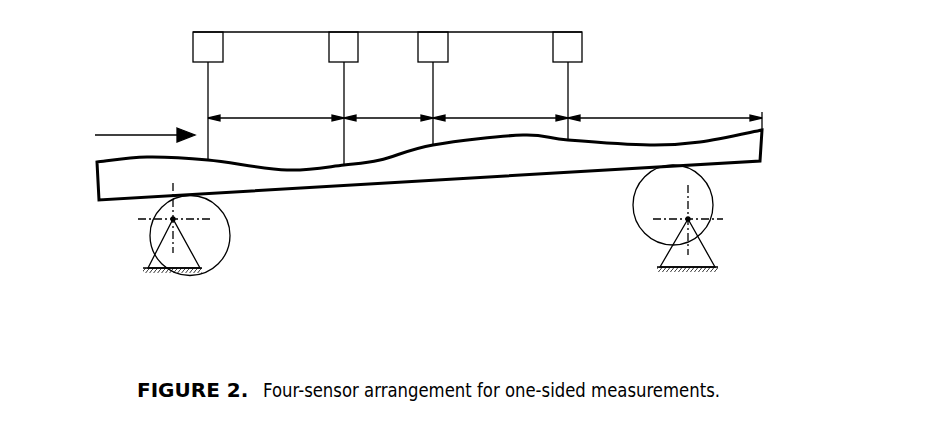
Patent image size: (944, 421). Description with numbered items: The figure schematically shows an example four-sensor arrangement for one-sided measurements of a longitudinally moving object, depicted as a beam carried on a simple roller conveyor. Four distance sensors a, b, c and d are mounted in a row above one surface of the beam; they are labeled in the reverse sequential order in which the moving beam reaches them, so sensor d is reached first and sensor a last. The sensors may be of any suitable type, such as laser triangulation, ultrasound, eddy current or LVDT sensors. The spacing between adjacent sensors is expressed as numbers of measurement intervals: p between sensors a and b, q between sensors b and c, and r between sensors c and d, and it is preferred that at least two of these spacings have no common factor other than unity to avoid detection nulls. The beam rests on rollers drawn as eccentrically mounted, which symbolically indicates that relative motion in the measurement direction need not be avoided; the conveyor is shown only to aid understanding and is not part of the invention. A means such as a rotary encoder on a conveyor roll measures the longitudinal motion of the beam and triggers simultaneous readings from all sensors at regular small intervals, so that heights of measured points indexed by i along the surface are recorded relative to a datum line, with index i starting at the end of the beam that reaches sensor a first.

The distance sensor a is at (567, 86).
The distance sensor b is at (433, 88).
The distance sensor c is at (343, 98).
The distance sensor d is at (208, 96).
The sensor spacing r is at (276, 110).
The sensor spacing q is at (388, 110).
The sensor spacing p is at (500, 110).
The measurement point index i is at (665, 114).
The measured beam (workpiece) beam is at (429, 165).